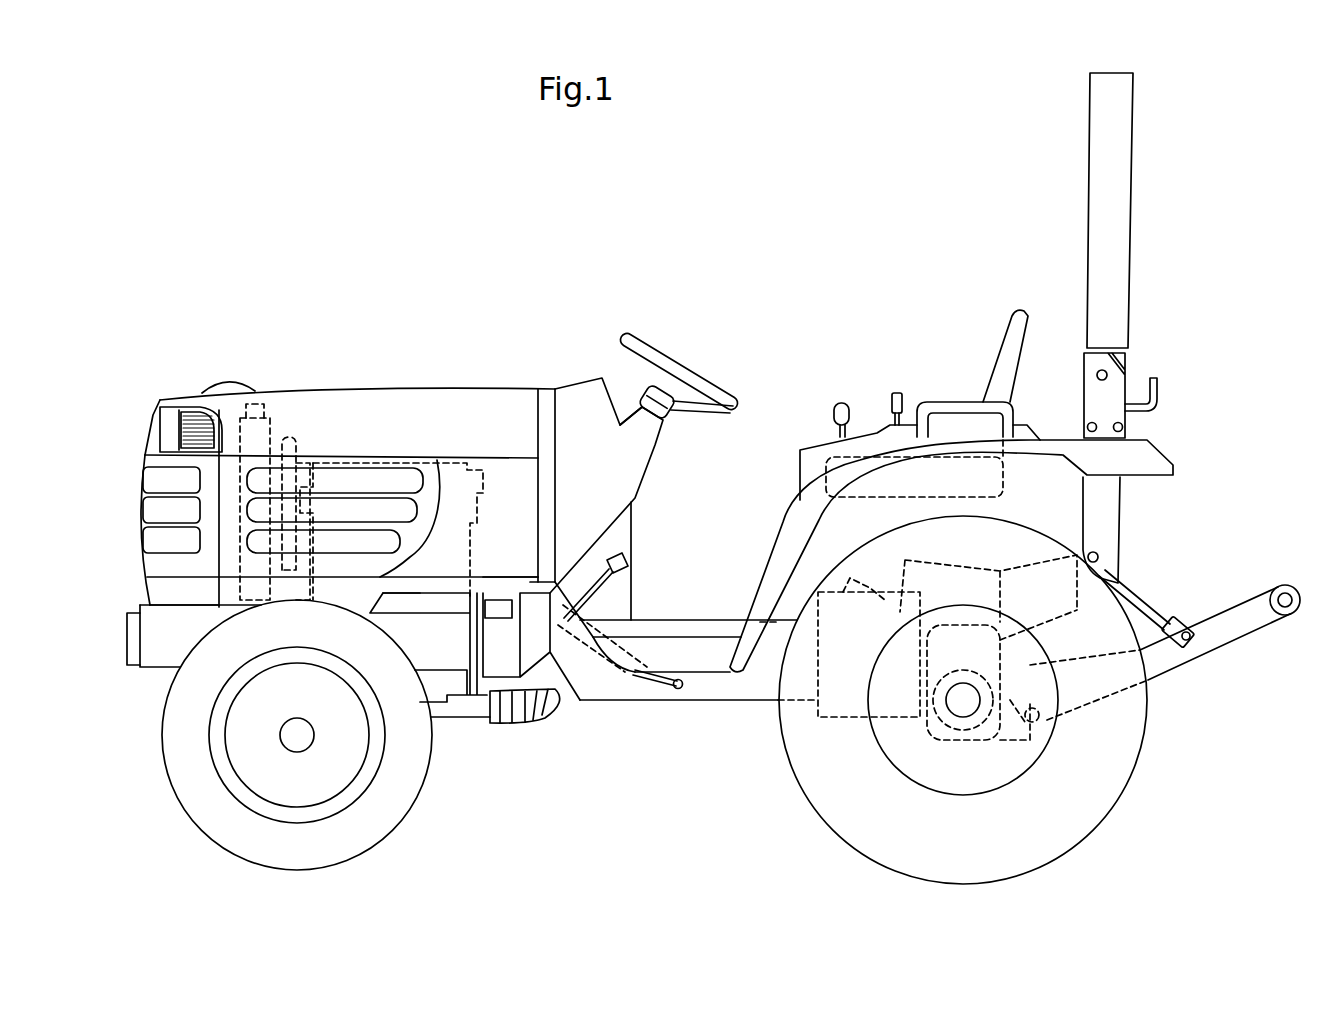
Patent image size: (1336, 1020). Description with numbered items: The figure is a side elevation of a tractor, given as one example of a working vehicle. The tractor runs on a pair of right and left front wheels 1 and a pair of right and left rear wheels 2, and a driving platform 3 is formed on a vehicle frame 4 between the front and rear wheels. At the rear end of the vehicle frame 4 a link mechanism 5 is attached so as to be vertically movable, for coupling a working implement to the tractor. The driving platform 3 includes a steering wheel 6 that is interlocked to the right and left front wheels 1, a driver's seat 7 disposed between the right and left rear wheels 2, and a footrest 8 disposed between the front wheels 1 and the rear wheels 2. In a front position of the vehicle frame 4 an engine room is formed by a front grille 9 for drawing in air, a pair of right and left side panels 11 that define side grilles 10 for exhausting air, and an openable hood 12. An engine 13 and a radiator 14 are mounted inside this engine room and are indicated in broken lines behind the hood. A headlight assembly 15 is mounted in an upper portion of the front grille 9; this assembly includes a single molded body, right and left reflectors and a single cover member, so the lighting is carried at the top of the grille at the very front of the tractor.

The front wheels 1 is at (195, 790).
The rear wheels 2 is at (1127, 760).
The driving platform 3 is at (784, 363).
The vehicle frame 4 is at (157, 670).
The link mechanism 5 is at (1177, 668).
The steering wheel 6 is at (670, 355).
The driver's seat 7 is at (1000, 357).
The footrest 8 is at (641, 620).
The front grille 9 is at (148, 505).
The side grilles 10 is at (346, 479).
The side panels 11 is at (517, 470).
The hood 12 is at (437, 400).
The engine 13 is at (368, 458).
The radiator 14 is at (256, 395).
The headlight assembly 15 is at (157, 432).